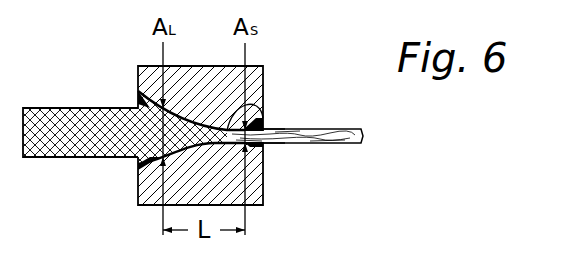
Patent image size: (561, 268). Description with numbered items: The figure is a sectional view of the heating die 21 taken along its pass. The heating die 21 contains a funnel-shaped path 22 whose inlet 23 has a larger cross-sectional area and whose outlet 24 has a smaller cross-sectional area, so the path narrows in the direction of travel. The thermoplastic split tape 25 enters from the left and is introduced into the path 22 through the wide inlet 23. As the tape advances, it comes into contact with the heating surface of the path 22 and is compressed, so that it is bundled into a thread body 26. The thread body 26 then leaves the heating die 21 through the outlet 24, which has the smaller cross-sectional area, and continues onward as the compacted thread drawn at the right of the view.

The heating die 21 is at (264, 76).
The funnel-shaped path 22 is at (261, 106).
The inlet 23 is at (138, 168).
The outlet 24 is at (280, 144).
The thermoplastic split tape 25 is at (50, 108).
The thread body 26 is at (340, 144).